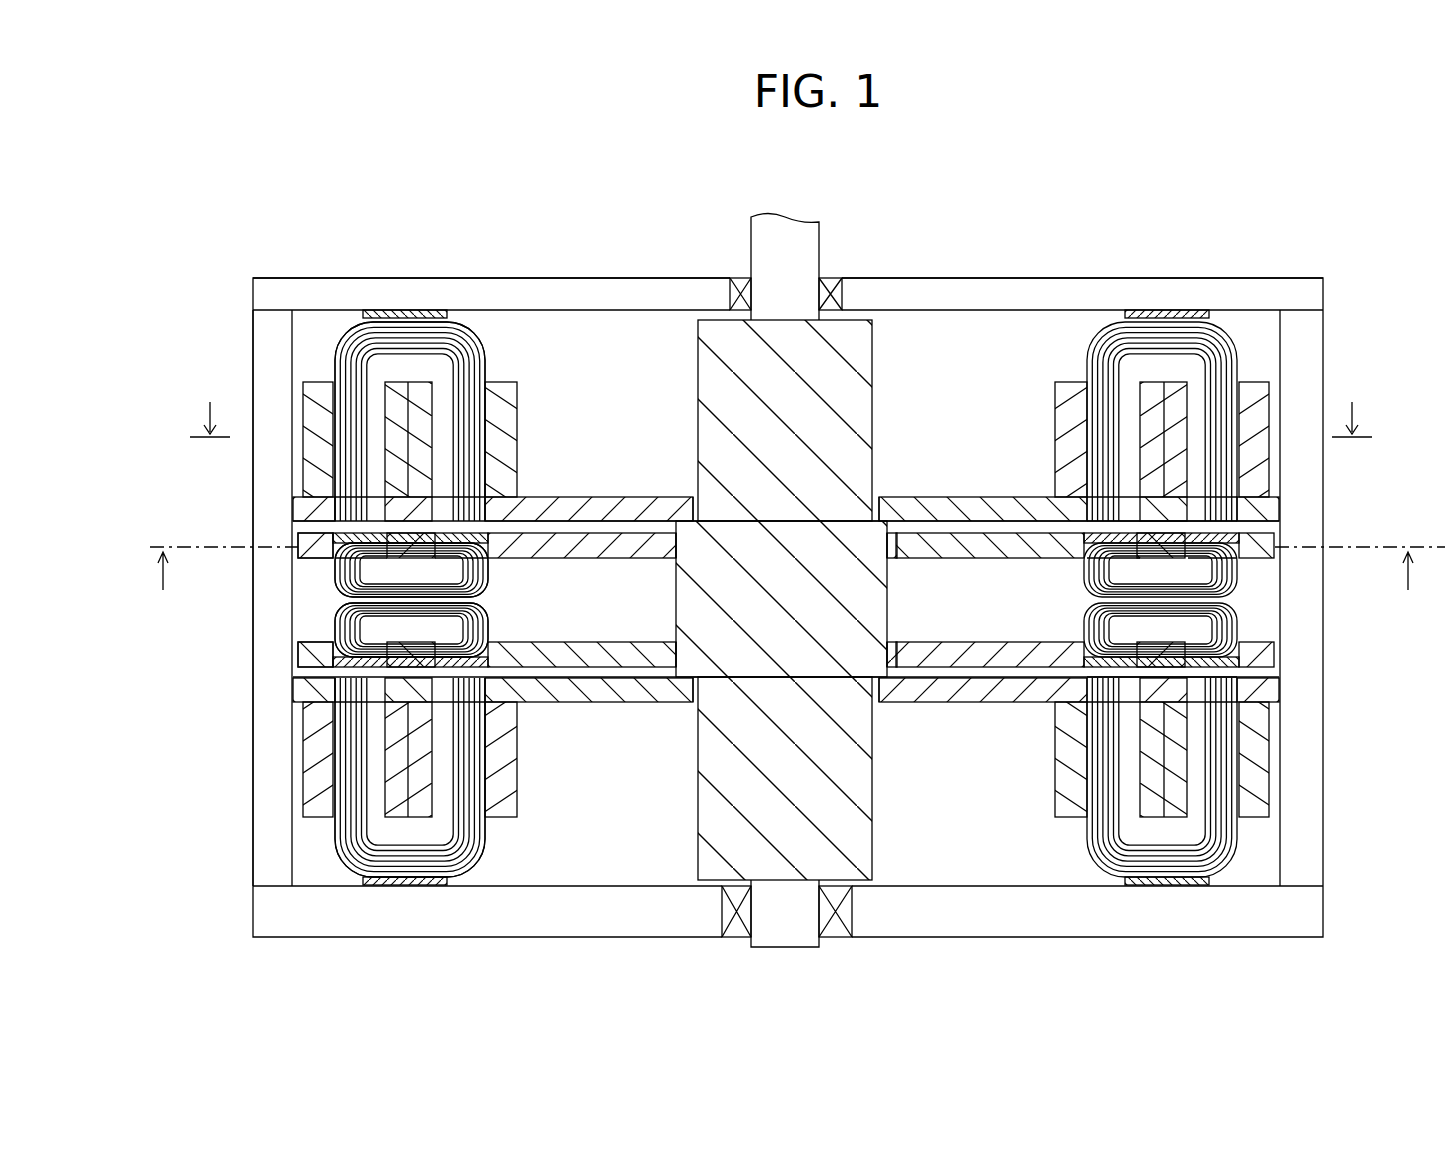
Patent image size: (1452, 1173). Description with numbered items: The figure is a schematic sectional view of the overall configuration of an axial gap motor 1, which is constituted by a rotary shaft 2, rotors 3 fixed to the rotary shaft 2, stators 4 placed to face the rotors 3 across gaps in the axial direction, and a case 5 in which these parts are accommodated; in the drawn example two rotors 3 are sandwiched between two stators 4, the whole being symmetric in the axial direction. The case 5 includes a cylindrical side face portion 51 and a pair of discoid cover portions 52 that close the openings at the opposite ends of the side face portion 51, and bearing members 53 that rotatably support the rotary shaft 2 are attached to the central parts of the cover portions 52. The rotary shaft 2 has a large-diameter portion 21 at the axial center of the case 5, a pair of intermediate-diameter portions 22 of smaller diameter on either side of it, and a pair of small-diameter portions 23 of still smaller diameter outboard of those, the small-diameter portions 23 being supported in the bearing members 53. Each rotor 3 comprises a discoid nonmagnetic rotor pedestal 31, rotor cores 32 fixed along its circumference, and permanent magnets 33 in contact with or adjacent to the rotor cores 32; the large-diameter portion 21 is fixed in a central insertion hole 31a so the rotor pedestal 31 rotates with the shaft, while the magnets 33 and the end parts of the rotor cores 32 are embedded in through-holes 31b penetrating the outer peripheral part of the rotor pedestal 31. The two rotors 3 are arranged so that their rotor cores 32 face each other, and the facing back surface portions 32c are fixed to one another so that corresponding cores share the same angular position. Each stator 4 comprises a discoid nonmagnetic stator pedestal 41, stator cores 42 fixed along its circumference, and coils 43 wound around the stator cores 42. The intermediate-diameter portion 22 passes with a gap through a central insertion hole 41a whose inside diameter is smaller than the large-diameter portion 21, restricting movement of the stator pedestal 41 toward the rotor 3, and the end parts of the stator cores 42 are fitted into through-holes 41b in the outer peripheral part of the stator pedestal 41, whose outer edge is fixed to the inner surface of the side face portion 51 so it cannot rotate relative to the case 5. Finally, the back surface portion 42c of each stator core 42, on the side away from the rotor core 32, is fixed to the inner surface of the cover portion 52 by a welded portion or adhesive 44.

The axial gap motor 1 is at (1201, 209).
The rotary shaft 2 is at (868, 345).
The large-diameter portion 21 is at (860, 578).
The intermediate-diameter portion 22 is at (865, 418).
The small-diameter portion 23 is at (822, 232).
The rotor 3 is at (1272, 553).
The rotor pedestal 31 is at (562, 558).
The insertion hole 31a is at (675, 542).
The through-hole 31b is at (350, 560).
The rotor core 32 is at (1092, 572).
The back surface portion 32c is at (400, 617).
The permanent magnet 33 is at (340, 663).
The stator 4 is at (1273, 508).
The stator pedestal 41 is at (583, 506).
The insertion hole 41a is at (690, 510).
The through-hole 41b is at (1200, 690).
The stator core 42 is at (1095, 352).
The back surface portion 42c is at (415, 342).
The coil 43 is at (1062, 430).
The welded portion or adhesive 44 is at (1127, 314).
The case 5 is at (1293, 296).
The side face portion 51 is at (275, 489).
The cover portion 52 is at (568, 305).
The bearing member 53 is at (740, 290).